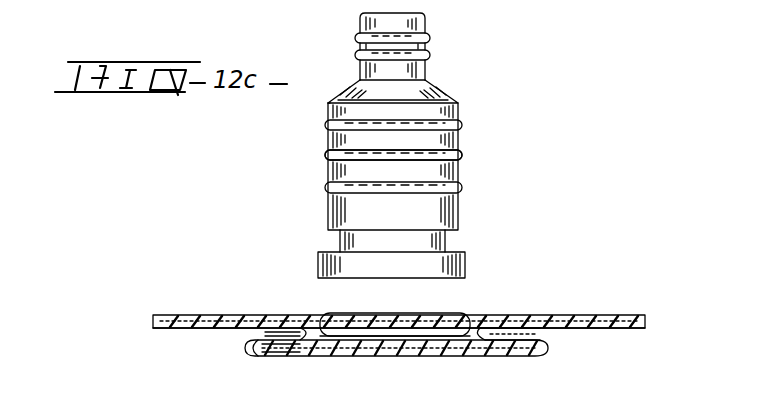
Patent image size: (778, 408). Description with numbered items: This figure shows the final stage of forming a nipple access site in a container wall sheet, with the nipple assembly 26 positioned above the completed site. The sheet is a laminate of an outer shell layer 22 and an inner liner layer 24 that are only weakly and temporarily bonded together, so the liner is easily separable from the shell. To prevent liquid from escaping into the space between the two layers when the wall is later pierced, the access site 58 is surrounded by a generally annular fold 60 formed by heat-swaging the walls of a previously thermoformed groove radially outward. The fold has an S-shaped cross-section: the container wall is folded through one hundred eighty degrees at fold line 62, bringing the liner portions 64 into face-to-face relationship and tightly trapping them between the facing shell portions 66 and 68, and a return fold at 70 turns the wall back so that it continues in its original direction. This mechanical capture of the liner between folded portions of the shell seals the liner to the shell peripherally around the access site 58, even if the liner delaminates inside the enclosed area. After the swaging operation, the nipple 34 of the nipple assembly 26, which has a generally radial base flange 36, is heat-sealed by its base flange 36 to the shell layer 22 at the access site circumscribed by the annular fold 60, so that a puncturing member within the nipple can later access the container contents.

The shell layer 22 is at (610, 316).
The liner layer 24 is at (640, 330).
The nipple assembly 26 is at (480, 137).
The nipple 34 is at (355, 170).
The base flange 36 is at (462, 262).
The access site 58 is at (470, 310).
The annular fold 60 is at (522, 360).
The fold line 62 is at (336, 330).
The liner portions 64 is at (300, 325).
The shell portion 66 is at (305, 330).
The shell portion 68 is at (300, 346).
The return fold 70 is at (258, 345).